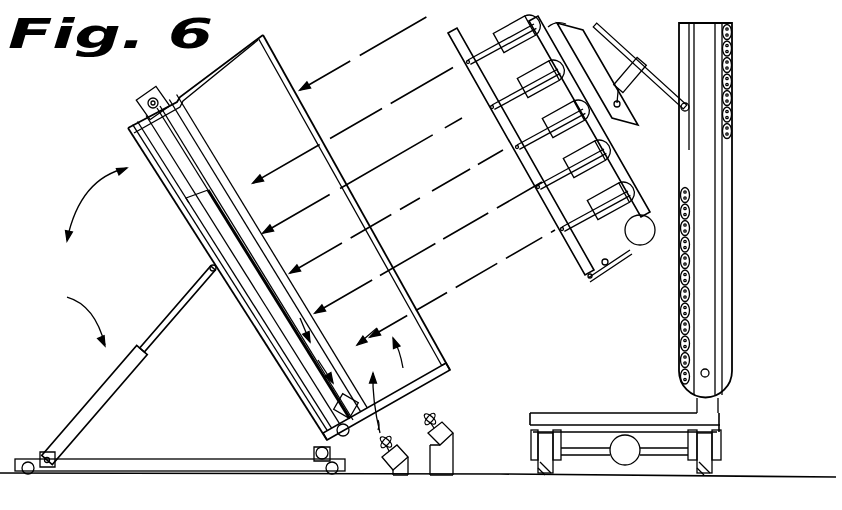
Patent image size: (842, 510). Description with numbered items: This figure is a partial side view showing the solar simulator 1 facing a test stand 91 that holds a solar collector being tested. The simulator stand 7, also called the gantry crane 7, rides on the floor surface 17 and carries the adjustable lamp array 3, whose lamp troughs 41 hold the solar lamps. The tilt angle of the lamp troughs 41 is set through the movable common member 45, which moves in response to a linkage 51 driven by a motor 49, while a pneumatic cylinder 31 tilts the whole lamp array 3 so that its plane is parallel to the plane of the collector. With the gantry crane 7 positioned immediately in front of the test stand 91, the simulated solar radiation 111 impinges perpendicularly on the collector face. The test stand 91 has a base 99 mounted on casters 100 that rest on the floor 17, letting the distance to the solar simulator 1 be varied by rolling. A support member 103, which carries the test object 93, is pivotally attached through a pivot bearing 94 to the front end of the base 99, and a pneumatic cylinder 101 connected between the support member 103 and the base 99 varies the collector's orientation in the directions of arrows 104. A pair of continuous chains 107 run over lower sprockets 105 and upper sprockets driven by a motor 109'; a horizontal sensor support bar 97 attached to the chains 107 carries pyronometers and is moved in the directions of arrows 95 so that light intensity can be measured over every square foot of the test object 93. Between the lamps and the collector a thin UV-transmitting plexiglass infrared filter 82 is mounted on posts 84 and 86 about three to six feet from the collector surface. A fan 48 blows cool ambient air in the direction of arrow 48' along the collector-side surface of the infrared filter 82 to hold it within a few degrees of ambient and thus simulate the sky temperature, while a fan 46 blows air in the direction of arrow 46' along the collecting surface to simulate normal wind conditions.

The solar simulator 1 is at (547, 336).
The lamp array 3 is at (600, 306).
The simulator stand 7 is at (672, 358).
The floor surface 17 is at (747, 477).
The pneumatic cylinder 31 is at (625, 82).
The lamp troughs 41 is at (623, 184).
The movable common member 45 is at (563, 245).
The fan 46 is at (408, 470).
The arrow 46' is at (398, 417).
The fan 48 is at (468, 459).
The arrow 48' is at (433, 371).
The motor 49 is at (633, 245).
The linkage 51 is at (608, 260).
The infrared filter 82 is at (388, 242).
The post 84 is at (205, 82).
The post 86 is at (437, 336).
The test stand 91 is at (76, 317).
The test object 93 is at (217, 187).
The pivot bearing 94 is at (312, 455).
The arrows 95 is at (327, 328).
The sensor support bar 97 is at (342, 398).
The base 99 is at (137, 458).
The casters 100 is at (25, 475).
The pneumatic cylinder 101 is at (128, 384).
The support member 103 is at (233, 305).
The arrows 104 is at (80, 203).
The sprockets 105 is at (338, 410).
The continuous chains 107 is at (262, 268).
The motor 109' is at (126, 103).
The simulated solar radiation 111 is at (471, 278).